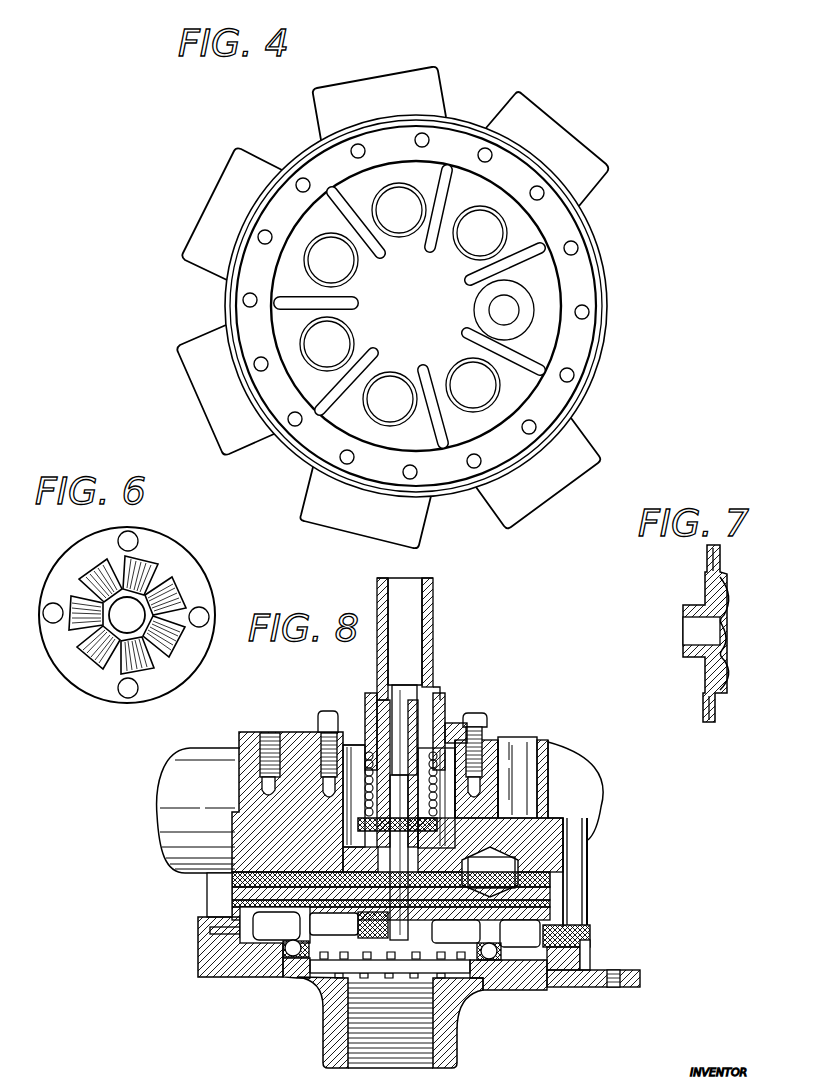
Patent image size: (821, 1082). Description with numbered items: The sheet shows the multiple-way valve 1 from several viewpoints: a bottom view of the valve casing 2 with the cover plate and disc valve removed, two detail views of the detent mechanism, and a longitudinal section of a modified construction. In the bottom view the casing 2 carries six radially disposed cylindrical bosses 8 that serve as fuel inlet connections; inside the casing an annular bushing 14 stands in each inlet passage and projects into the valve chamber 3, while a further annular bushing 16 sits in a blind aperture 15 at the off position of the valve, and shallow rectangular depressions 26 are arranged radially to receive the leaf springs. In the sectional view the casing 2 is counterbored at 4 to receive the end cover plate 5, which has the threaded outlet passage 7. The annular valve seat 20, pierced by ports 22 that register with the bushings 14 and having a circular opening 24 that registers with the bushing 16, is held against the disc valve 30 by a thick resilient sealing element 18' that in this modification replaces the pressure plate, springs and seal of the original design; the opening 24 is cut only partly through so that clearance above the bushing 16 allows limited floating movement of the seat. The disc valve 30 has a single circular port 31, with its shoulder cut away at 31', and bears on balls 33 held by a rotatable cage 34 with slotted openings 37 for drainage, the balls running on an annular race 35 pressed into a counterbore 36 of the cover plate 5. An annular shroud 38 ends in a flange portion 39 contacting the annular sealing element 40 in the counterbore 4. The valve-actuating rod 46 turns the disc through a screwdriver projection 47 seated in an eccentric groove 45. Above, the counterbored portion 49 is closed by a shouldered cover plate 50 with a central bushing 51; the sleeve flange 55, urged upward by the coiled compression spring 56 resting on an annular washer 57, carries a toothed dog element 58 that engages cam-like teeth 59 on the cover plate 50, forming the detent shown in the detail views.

In FIG. 4, the multiple-way valve 1 is at (612, 353).
In FIG. 8, the multiple-way valve 1 is at (202, 897).
In FIG. 8, the valve casing 2 is at (290, 730).
In FIG. 8, the valve chamber 3 is at (255, 950).
In FIG. 8, the counterbore 4 is at (210, 930).
In FIG. 8, the end cover plate 5 is at (617, 987).
In FIG. 8, the threaded outlet passage 7 is at (454, 1035).
In FIG. 4, the cylindrical bosses 8 is at (497, 517).
In FIG. 8, the cylindrical bosses 8 is at (213, 752).
In FIG. 4, the annular bushing 14 is at (393, 376).
In FIG. 4, the blind aperture 15 is at (523, 293).
In FIG. 4, the annular bushing 16 is at (530, 310).
In FIG. 8, the annular bushing 16 is at (520, 870).
In FIG. 8, the resilient sealing element 18' is at (434, 883).
In FIG. 8, the annular valve seat 20 is at (207, 887).
In FIG. 4, the ports 22 is at (460, 260).
In FIG. 8, the circular opening 24 is at (550, 903).
In FIG. 4, the rectangular depressions 26 is at (473, 330).
In FIG. 8, the disc valve 30 is at (456, 931).
In FIG. 8, the circular port 31 is at (520, 933).
In FIG. 8, the cut-away portion 31' is at (530, 978).
In FIG. 8, the balls 33 is at (480, 990).
In FIG. 8, the rotatable cage 34 is at (475, 960).
In FIG. 8, the annular race 35 is at (320, 978).
In FIG. 8, the counterbore 36 is at (510, 990).
In FIG. 8, the slotted openings 37 is at (392, 965).
In FIG. 8, the annular shroud 38 is at (590, 935).
In FIG. 8, the flange portion 39 is at (557, 987).
In FIG. 8, the annular sealing element 40 is at (573, 949).
In FIG. 8, the slot or groove 45 is at (349, 925).
In FIG. 8, the valve-actuating rod 46 is at (433, 640).
In FIG. 8, the screwdriver projection 47 is at (390, 966).
In FIG. 8, the counterbored portion 49 is at (434, 765).
In FIG. 6, the shouldered cover plate 50 is at (197, 597).
In FIG. 7, the shouldered cover plate 50 is at (706, 578).
In FIG. 8, the shouldered cover plate 50 is at (447, 727).
In FIG. 8, the bushing 51 is at (366, 697).
In FIG. 8, the flange 55 is at (357, 727).
In FIG. 8, the coiled compression spring 56 is at (487, 727).
In FIG. 8, the annular washer 57 is at (467, 808).
In FIG. 8, the toothed dog element 58 is at (437, 727).
In FIG. 6, the teeth 59 is at (180, 640).
In FIG. 7, the teeth 59 is at (730, 647).
In FIG. 8, the teeth 59 is at (345, 740).